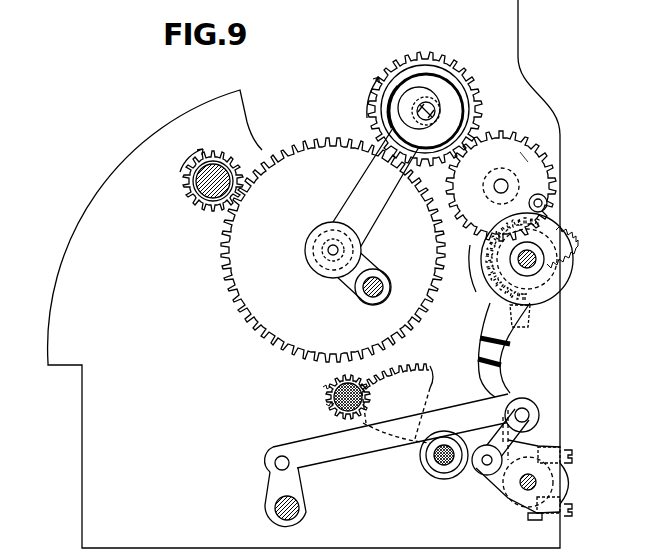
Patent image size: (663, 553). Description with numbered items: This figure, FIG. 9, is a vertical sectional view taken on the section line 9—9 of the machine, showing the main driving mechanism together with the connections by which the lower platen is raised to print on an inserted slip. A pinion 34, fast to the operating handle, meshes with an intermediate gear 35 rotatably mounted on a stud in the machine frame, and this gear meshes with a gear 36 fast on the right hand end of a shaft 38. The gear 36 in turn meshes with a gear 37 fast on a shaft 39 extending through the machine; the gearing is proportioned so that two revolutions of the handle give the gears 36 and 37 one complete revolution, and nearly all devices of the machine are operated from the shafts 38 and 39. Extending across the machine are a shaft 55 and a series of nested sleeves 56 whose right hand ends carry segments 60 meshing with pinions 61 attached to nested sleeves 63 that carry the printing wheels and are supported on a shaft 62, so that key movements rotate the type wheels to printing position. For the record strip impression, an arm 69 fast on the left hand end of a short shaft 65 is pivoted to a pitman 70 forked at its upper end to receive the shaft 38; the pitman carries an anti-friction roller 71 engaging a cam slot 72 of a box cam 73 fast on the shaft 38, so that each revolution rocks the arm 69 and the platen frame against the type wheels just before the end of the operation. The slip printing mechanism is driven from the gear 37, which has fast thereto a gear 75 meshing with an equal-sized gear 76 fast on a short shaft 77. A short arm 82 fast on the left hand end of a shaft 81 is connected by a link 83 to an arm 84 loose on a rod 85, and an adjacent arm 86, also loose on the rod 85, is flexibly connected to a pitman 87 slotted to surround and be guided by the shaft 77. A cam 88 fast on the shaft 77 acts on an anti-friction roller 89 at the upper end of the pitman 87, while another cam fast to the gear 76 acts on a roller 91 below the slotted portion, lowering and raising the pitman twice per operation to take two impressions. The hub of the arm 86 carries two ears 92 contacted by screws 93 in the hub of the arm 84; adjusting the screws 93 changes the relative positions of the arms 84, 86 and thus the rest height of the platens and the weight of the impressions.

The frame plate 9 is at (562, 283).
The pinion 34 is at (196, 190).
The intermediate gear 35 is at (245, 266).
The gear 36 is at (440, 60).
The gear 37 is at (517, 136).
The shaft 38 is at (432, 106).
The shaft 39 is at (508, 187).
The shaft 55 is at (450, 464).
The nested sleeves 56 is at (440, 466).
The segments 60 is at (418, 388).
The pinions 61 is at (323, 387).
The shaft 62 is at (328, 406).
The nested sleeves 63 is at (362, 388).
The short shaft 65 is at (388, 283).
The arm 69 is at (366, 260).
The pitman 70 is at (372, 186).
The anti-friction roller 71 is at (405, 134).
The cam slot 72 is at (456, 110).
The box cam 73 is at (462, 93).
The gear 75 is at (524, 160).
The gear 76 is at (563, 265).
The short shaft 77 is at (534, 257).
The shaft 81 is at (300, 516).
The short arm 82 is at (297, 490).
The link 83 is at (360, 447).
The arm 84 is at (534, 436).
The rod 85 is at (525, 484).
The arm 86 is at (495, 478).
The pitman 87 is at (497, 354).
The cam 88 is at (495, 303).
The anti-friction roller 89 is at (548, 202).
The anti-friction roller 91 is at (521, 312).
The ears 92 is at (538, 446).
The screws 93 is at (569, 504).